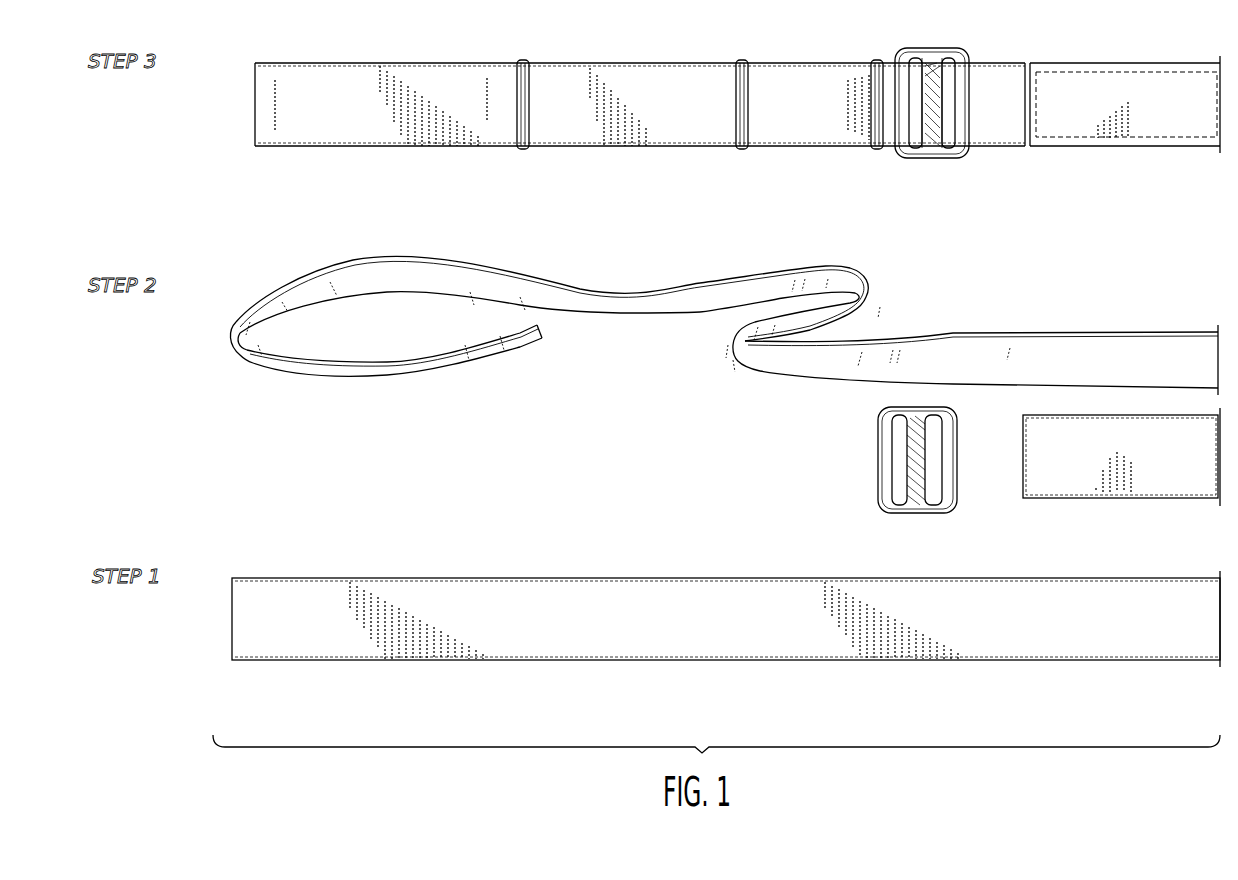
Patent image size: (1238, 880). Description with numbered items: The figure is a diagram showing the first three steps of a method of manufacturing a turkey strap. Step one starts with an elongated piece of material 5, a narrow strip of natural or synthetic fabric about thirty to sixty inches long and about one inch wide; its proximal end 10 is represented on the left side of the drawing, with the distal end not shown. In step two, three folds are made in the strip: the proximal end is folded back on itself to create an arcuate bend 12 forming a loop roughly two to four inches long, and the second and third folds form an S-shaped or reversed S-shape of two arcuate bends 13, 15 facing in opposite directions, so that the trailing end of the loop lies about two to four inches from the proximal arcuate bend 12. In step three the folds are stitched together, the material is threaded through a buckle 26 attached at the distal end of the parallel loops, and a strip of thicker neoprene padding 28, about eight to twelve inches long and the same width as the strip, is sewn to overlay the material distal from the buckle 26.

The elongated piece of material 5 is at (1000, 201).
The proximal end 10 is at (297, 660).
The arcuate bend 12 is at (400, 380).
The arcuate bend 13 is at (780, 378).
The arcuate bend 15 is at (852, 268).
The buckle 26 is at (945, 503).
The neoprene padding 28 is at (1063, 473).